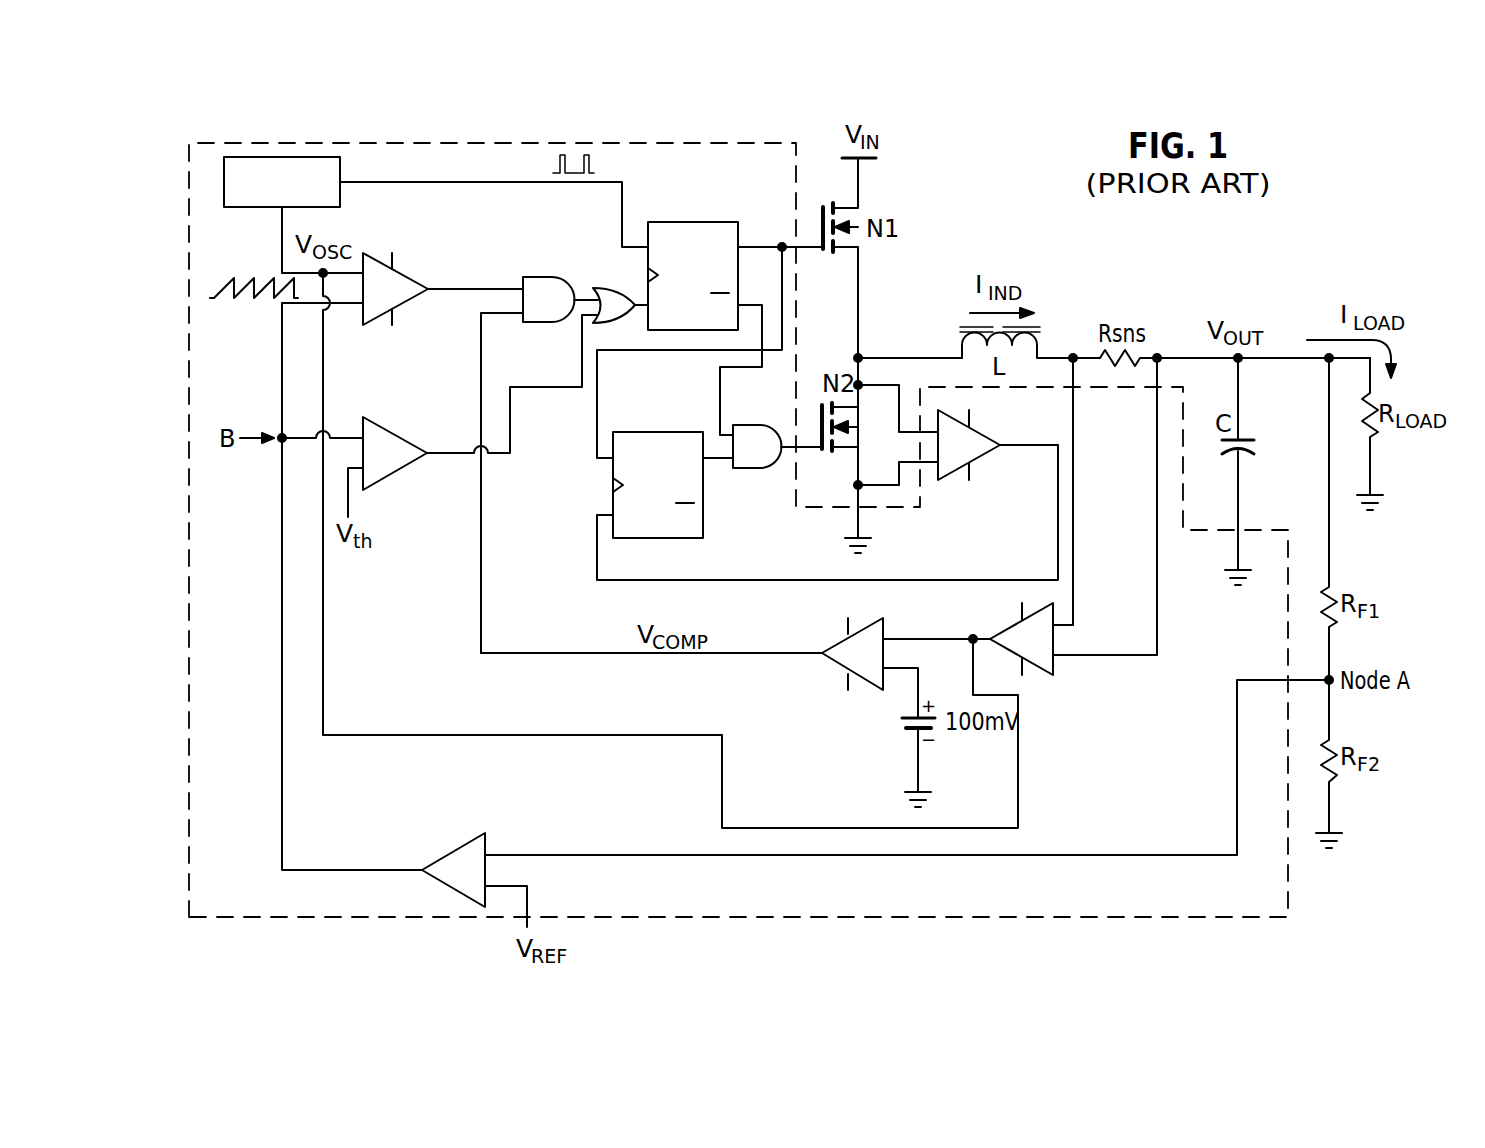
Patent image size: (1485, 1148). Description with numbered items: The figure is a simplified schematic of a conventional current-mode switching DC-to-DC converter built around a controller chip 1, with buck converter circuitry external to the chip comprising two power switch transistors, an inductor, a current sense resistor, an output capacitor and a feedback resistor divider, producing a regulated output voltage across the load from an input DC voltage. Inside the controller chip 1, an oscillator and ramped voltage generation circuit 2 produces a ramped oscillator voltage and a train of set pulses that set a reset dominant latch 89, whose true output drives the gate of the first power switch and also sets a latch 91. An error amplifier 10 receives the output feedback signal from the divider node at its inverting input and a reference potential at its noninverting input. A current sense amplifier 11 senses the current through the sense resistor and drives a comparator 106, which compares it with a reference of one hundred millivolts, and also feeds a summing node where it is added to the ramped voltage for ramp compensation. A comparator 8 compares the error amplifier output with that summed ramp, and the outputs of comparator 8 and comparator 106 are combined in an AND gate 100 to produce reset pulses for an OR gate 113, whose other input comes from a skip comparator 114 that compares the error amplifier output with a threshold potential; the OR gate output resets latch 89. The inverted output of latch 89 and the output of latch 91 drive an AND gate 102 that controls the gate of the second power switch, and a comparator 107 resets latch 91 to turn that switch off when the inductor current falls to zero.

The controller chip 1 is at (265, 143).
The oscillator and ramped voltage generation circuit 2 is at (340, 171).
The comparator 8 is at (363, 317).
The error amplifier 10 is at (456, 852).
The current sense amplifier 11 is at (1053, 641).
The reset dominant latch 89 is at (738, 246).
The latch 91 is at (665, 432).
The AND gate 100 is at (535, 322).
The AND gate 102 is at (755, 468).
The comparator 106 is at (840, 641).
The comparator 107 is at (980, 436).
The OR gate 113 is at (599, 287).
The skip comparator 114 is at (397, 473).